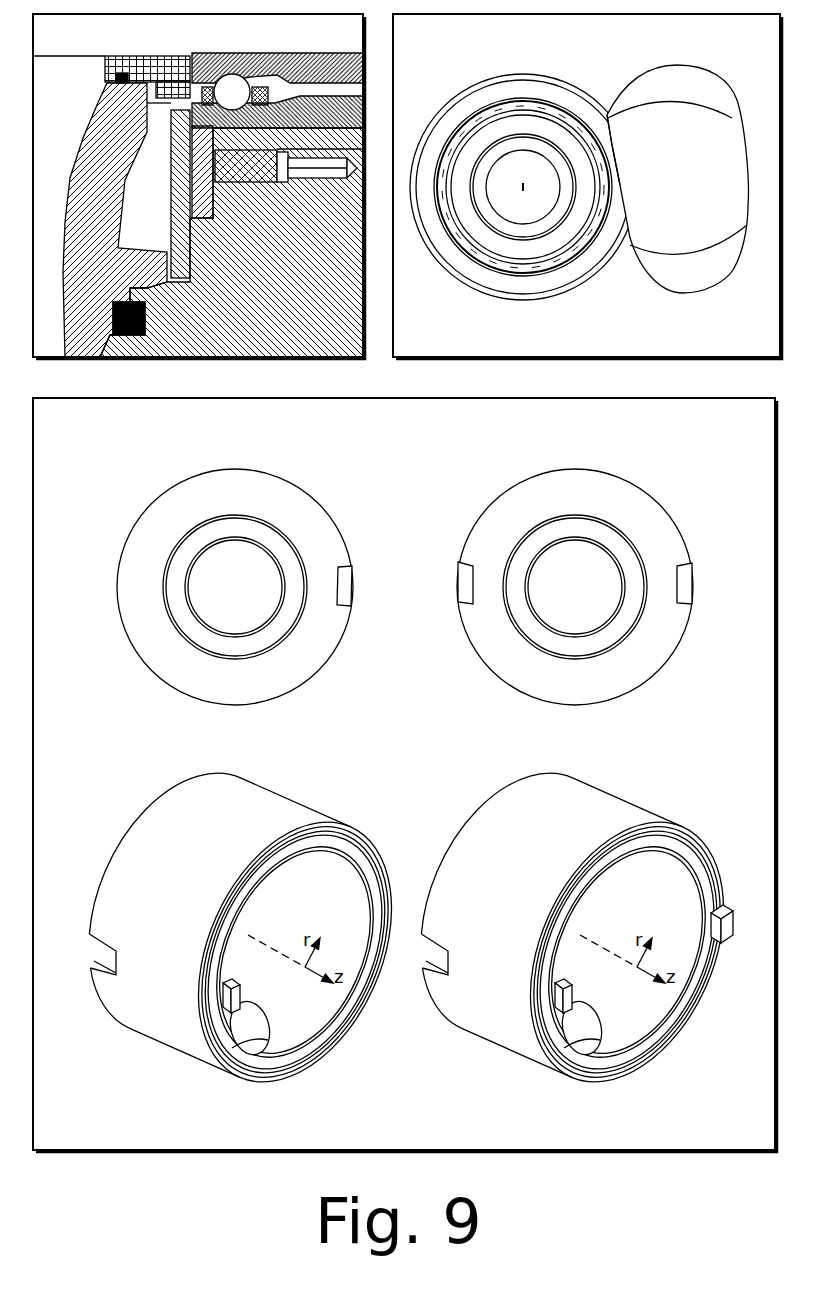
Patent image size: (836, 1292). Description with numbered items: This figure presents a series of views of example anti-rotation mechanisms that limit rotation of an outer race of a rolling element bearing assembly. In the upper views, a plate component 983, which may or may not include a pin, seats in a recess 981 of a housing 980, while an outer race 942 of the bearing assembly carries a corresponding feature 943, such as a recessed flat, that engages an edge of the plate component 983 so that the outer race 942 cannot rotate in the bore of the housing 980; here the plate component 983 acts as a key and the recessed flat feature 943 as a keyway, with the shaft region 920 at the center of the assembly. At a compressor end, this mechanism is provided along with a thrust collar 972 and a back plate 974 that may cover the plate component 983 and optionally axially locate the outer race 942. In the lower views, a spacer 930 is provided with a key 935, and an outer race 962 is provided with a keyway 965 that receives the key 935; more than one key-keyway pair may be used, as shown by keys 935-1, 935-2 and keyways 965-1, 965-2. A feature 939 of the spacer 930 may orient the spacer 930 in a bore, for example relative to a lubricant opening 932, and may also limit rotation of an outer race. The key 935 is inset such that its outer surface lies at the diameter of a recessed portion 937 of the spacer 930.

The shaft 920 is at (238, 43).
The thrust collar 972 is at (107, 73).
The back plate 974 is at (107, 112).
The housing 980 is at (626, 333).
The plate component 983 is at (711, 221).
The outer race 942 is at (353, 126).
The recessed flat feature 943 is at (608, 118).
The recess 981 is at (711, 281).
The outer race 962 is at (180, 495).
The keyway 965 is at (350, 582).
The keyway 965-1 is at (462, 590).
The keyway 965-2 is at (687, 588).
The spacer 930 is at (177, 815).
The recessed portion 937 is at (323, 830).
The feature 939 is at (100, 937).
The key 935 is at (223, 998).
The key 935-1 is at (553, 1000).
The key 935-2 is at (715, 928).
The lubricant opening 932 is at (263, 1033).